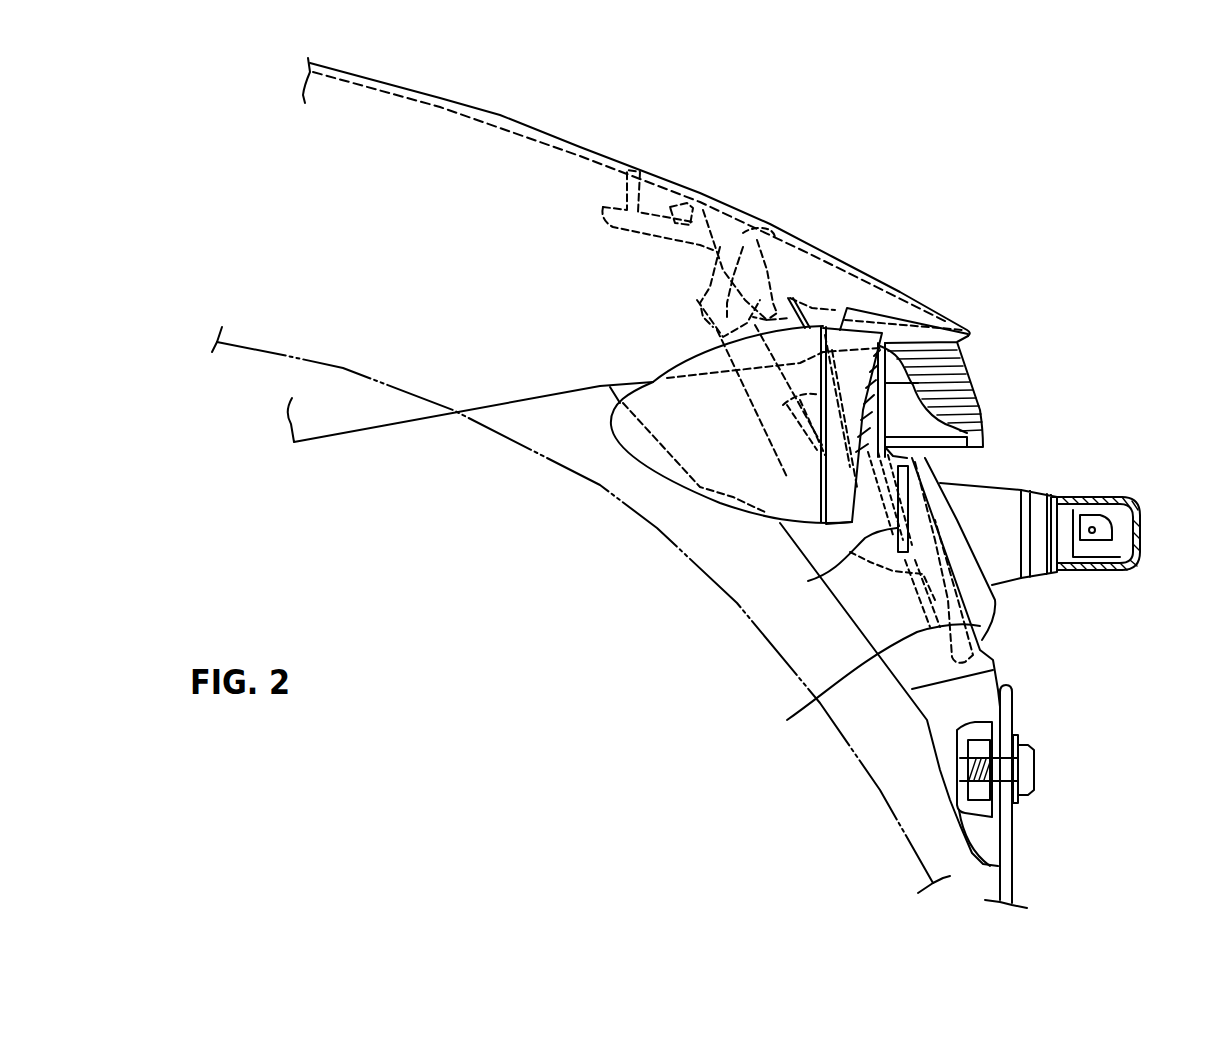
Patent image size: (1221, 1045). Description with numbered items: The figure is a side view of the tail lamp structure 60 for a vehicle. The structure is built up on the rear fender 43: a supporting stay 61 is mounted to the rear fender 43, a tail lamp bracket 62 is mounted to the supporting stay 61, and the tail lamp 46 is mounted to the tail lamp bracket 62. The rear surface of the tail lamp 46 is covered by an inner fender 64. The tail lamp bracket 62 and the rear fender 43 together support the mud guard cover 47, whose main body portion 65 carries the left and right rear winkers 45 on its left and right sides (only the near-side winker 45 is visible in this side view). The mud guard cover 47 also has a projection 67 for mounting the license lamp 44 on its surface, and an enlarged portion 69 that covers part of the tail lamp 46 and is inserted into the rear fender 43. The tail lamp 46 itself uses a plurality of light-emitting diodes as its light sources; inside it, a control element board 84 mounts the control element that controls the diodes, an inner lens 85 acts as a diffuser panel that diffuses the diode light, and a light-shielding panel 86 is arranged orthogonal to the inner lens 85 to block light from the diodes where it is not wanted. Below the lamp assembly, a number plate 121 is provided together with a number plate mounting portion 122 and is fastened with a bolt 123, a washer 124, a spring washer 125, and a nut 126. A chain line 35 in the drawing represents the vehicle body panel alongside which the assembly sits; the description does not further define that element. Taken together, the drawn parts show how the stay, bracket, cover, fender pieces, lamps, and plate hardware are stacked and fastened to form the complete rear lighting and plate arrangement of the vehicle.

The tail lamp structure 60 is at (192, 107).
The rear fender 43 is at (561, 119).
The front fender panel 35 is at (343, 368).
The supporting stay 61 is at (743, 233).
The tail lamp bracket 62 is at (762, 287).
The rear winker 45 is at (847, 308).
The tail lamp 46 is at (997, 361).
The inner lens 85 is at (957, 345).
The light-shielding panel 86 is at (967, 410).
The enlarged portion 69 is at (950, 503).
The projection 67 is at (1015, 487).
The license lamp 44 is at (1090, 494).
The control element board 84 is at (808, 581).
The main body portion 65 is at (993, 657).
The inner fender 64 is at (787, 720).
The mud guard cover 47 is at (1040, 692).
The number plate 121 is at (1013, 871).
The number plate mounting portion 122 is at (1013, 722).
The bolt 123 is at (1034, 768).
The washer 124 is at (1018, 820).
The spring washer 125 is at (958, 742).
The nut 126 is at (957, 791).